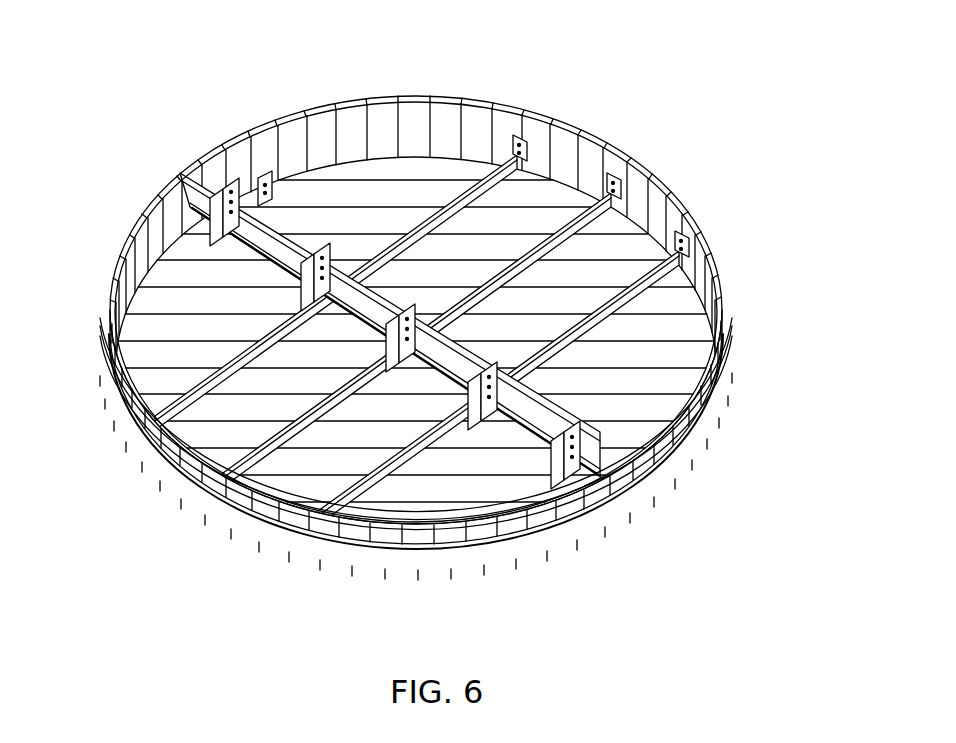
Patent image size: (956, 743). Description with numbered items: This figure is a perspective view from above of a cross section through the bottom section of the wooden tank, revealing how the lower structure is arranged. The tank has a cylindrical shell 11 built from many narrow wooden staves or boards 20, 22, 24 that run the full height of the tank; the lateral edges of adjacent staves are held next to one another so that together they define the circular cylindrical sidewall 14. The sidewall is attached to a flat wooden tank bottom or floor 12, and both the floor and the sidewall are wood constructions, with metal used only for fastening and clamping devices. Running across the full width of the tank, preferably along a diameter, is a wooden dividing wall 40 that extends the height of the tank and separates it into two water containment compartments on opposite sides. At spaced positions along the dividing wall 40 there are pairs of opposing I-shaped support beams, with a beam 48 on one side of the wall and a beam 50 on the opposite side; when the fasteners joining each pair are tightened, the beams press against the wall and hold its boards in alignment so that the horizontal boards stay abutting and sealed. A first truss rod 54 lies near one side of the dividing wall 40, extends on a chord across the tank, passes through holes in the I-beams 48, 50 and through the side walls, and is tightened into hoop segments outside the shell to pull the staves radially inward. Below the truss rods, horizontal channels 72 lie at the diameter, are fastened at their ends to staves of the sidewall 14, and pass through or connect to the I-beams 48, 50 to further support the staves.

The cylindrical shell 11 is at (680, 428).
The tank bottom 12 is at (680, 380).
The sidewall 14 is at (665, 178).
The stave 20 is at (440, 97).
The stave 22 is at (410, 96).
The stave 24 is at (385, 96).
The dividing wall 40 is at (217, 191).
The I-shaped support beam 48 is at (218, 224).
The I-shaped support beam 50 is at (267, 172).
The first truss rod 54 is at (275, 232).
The horizontal channel 72 is at (475, 152).